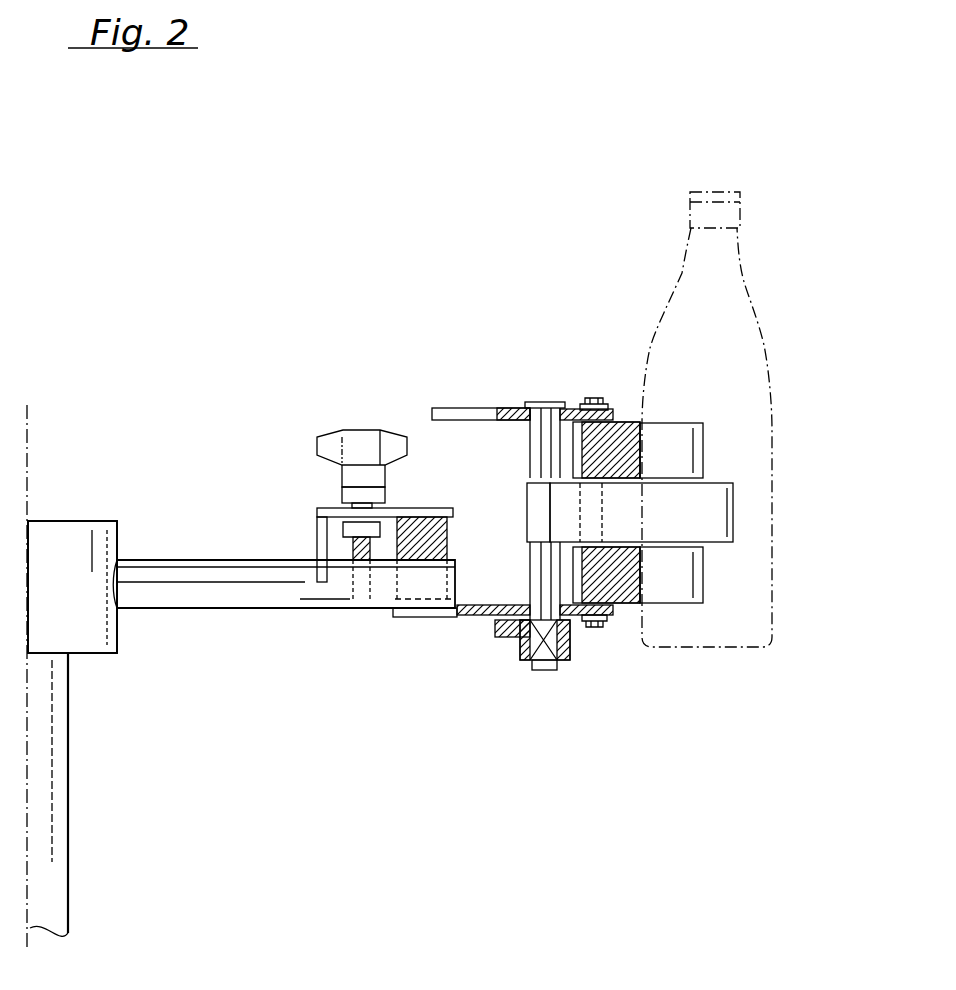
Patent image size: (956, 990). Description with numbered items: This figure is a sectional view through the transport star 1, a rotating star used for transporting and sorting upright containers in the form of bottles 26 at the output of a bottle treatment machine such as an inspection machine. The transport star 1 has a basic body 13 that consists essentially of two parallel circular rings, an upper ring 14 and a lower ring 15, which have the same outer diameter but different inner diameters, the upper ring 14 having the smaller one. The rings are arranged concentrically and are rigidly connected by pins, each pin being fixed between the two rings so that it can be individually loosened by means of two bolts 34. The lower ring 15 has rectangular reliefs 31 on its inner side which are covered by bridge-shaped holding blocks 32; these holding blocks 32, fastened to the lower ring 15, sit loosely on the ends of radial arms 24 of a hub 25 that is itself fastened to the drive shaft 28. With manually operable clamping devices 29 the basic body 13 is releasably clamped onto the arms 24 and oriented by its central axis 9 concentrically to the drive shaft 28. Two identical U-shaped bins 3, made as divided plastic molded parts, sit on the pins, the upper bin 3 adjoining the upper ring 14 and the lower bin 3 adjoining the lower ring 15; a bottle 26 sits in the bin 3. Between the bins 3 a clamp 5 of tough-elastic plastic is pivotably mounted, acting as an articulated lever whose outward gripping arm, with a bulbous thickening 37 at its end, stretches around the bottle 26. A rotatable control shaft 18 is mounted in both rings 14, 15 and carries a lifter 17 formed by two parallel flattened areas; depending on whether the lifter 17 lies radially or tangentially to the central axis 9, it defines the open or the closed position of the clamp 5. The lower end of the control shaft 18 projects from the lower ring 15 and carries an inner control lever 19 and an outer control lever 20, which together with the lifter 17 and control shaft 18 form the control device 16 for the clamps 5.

The transport star 1 is at (329, 303).
The bin 3 is at (680, 440).
The clamp 5 is at (687, 527).
The central axis 9 is at (30, 429).
The basic body 13 is at (501, 352).
The upper ring 14 is at (473, 413).
The lower ring 15 is at (473, 615).
The control device 16 is at (524, 703).
The lifter 17 is at (545, 515).
The control shaft 18 is at (535, 402).
The inner control lever 19 is at (505, 637).
The outer control lever 20 is at (560, 670).
The radial arm 24 is at (190, 577).
The hub 25 is at (80, 537).
The bottle 26 is at (745, 275).
The drive shaft 28 is at (48, 878).
The clamping device 29 is at (357, 453).
The rectangular relief 31 is at (417, 617).
The holding block 32 is at (417, 507).
The bolt 34 is at (594, 397).
The bulbous thickening 37 is at (727, 510).